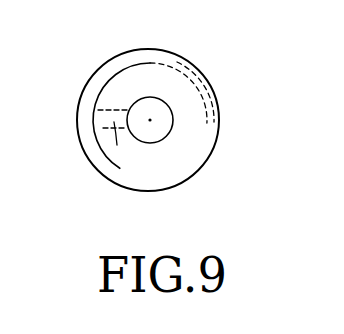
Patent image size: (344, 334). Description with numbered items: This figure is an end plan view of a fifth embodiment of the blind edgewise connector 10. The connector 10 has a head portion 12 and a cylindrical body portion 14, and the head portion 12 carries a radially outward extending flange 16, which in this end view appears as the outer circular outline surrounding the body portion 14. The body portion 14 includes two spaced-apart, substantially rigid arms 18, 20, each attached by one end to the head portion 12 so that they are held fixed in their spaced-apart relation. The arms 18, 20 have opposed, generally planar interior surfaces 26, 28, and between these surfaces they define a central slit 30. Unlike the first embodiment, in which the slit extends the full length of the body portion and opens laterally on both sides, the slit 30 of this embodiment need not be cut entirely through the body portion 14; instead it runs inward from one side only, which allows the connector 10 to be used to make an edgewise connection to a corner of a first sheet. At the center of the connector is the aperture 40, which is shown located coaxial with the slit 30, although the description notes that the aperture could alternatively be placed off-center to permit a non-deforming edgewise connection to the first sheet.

The edgewise connector 10 is at (133, 48).
The head portion 12 is at (214, 146).
The cylindrical body portion 14 is at (187, 161).
The flange 16 is at (213, 123).
The arm 18 is at (167, 78).
The arm 20 is at (143, 165).
The interior surface 26 is at (98, 111).
The interior surface 28 is at (101, 128).
The slit 30 is at (114, 127).
The aperture 40 is at (162, 110).